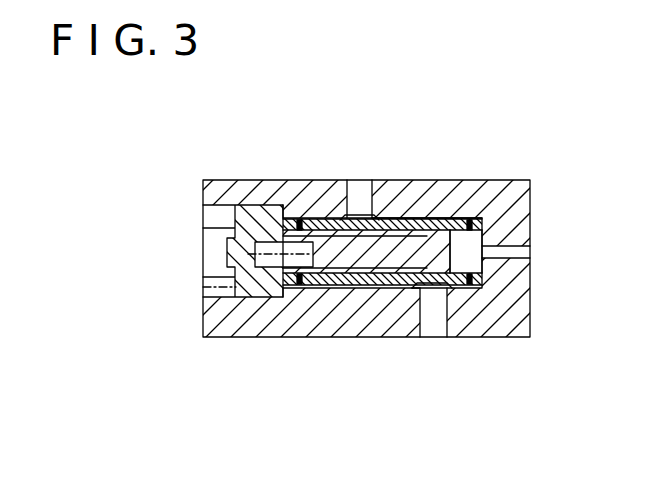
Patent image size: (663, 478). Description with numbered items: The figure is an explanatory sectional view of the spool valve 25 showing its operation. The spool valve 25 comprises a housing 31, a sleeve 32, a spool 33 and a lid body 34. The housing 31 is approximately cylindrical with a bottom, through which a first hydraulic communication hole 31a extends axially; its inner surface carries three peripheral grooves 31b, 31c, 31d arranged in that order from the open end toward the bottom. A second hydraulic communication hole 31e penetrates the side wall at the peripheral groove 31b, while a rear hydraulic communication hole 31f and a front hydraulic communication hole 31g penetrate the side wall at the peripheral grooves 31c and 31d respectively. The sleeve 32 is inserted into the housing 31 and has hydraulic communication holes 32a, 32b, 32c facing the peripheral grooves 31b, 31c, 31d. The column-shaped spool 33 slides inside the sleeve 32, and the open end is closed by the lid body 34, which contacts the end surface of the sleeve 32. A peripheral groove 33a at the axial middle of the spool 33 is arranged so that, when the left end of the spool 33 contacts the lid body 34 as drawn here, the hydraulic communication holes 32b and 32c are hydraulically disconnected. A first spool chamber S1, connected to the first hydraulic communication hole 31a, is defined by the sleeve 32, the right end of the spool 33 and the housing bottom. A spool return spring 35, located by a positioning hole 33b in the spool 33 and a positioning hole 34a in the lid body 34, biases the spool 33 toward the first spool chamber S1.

The spool valve 25 is at (520, 155).
The housing 31 is at (523, 313).
The first hydraulic communication hole 31a is at (531, 252).
The peripheral groove 31b is at (288, 300).
The peripheral groove 31c is at (404, 292).
The peripheral groove 31d is at (433, 190).
The second hydraulic communication hole 31e is at (291, 213).
The rear hydraulic communication hole 31f is at (369, 190).
The front hydraulic communication hole 31g is at (440, 324).
The sleeve 32 is at (346, 272).
The hydraulic communication hole 32a is at (292, 285).
The hydraulic communication hole 32b is at (388, 221).
The hydraulic communication hole 32c is at (424, 286).
The spool 33 is at (481, 219).
The peripheral groove 33a is at (377, 286).
The positioning hole 33b is at (307, 218).
The lid body 34 is at (243, 190).
The positioning hole 34a is at (230, 246).
The spool return spring 35 is at (203, 288).
The first spool chamber S1 is at (464, 256).